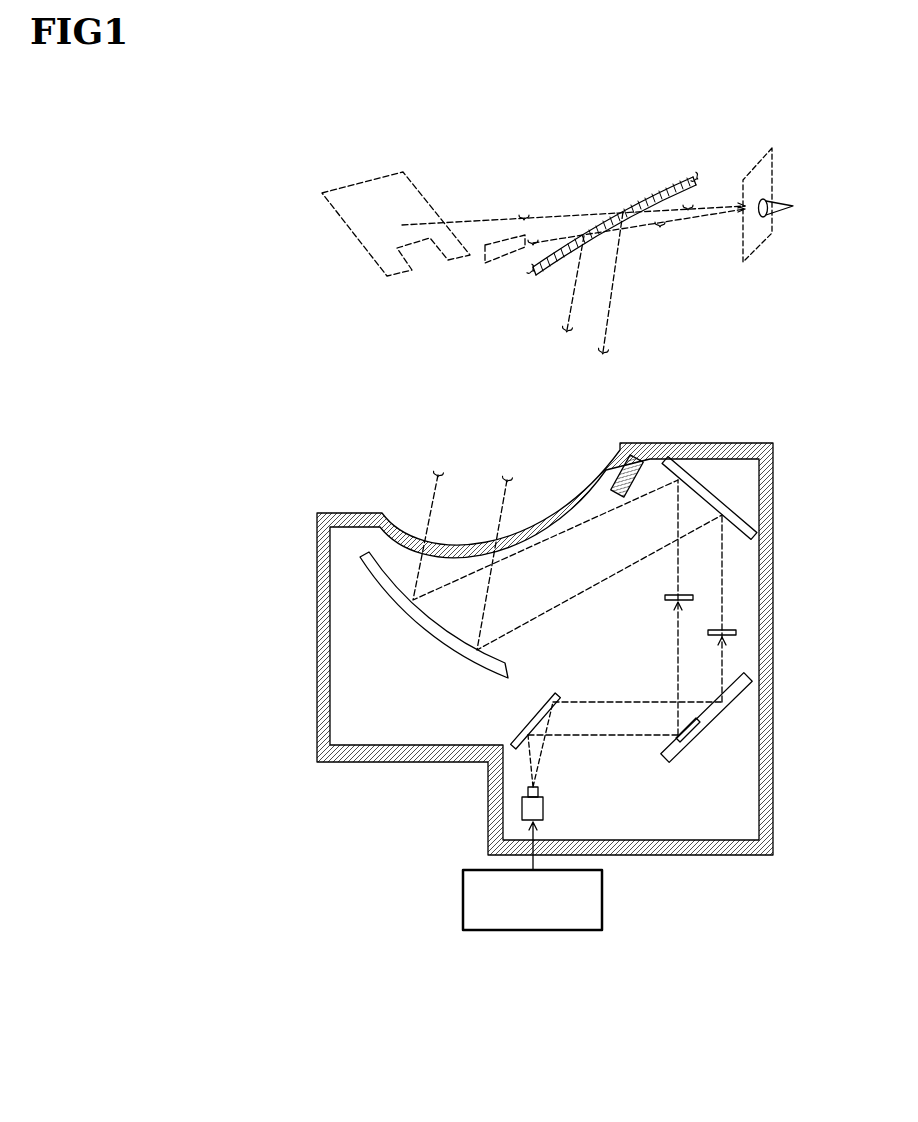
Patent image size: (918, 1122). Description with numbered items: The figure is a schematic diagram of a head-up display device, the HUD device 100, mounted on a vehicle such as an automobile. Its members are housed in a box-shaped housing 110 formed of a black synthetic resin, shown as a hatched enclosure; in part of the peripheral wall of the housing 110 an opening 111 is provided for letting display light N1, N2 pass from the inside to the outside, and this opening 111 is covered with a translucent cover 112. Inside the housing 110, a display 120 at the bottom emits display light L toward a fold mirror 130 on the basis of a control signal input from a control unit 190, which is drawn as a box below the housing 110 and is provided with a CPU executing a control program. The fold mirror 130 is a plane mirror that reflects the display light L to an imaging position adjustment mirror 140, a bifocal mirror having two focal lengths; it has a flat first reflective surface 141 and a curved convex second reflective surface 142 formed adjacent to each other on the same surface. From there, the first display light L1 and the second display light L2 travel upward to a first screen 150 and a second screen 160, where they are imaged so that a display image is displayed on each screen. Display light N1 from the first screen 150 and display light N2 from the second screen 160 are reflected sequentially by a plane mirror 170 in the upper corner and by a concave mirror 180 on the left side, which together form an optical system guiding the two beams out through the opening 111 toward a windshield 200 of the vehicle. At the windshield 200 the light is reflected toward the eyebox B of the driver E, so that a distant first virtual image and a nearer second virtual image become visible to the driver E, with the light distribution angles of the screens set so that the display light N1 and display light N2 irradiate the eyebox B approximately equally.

The HUD device 100 is at (545, 633).
The housing 110 is at (641, 443).
The opening 111 is at (573, 503).
The translucent cover 112 is at (591, 473).
The display 120 is at (545, 811).
The fold mirror 130 is at (546, 710).
The imaging position adjustment mirror 140 is at (700, 729).
The first reflective surface 141 is at (728, 688).
The second reflective surface 142 is at (670, 745).
The first screen 150 is at (716, 638).
The second screen 160 is at (671, 601).
The plane mirror 170 is at (752, 518).
The concave mirror 180 is at (437, 643).
The control unit 190 is at (603, 897).
The windshield 200 is at (644, 193).
The eyebox B is at (775, 152).
The driver E is at (781, 202).
The display light N1 is at (622, 244).
The display light N2 is at (575, 284).
The display light L is at (562, 705).
The first display light L1 is at (720, 687).
The second display light L2 is at (675, 648).